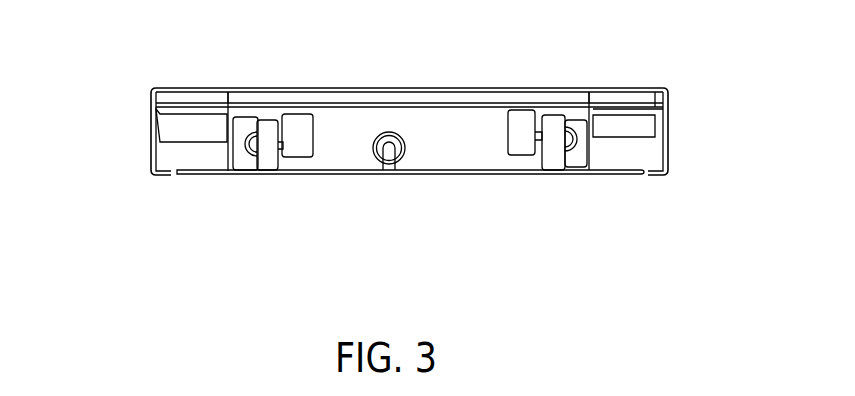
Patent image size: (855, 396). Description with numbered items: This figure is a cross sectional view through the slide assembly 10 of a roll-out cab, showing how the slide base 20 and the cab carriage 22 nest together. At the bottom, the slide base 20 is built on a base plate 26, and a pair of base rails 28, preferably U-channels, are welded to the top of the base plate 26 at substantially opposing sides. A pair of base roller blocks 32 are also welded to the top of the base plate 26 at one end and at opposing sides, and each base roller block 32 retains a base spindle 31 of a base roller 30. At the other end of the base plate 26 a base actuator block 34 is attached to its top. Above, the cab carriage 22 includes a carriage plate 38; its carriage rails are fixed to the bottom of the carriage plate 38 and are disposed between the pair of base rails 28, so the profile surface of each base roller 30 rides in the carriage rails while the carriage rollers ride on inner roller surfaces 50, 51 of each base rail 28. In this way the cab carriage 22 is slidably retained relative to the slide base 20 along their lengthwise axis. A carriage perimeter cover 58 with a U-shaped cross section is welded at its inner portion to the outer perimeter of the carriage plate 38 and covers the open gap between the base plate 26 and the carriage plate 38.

The slide assembly 10 is at (607, 64).
The slide base 20 is at (140, 177).
The cab carriage 22 is at (487, 66).
The base plate 26 is at (327, 176).
The base rails 28 is at (225, 158).
The base roller 30 is at (298, 146).
The base spindle 31 is at (273, 168).
The base roller blocks 32 is at (267, 168).
The base actuator block 34 is at (392, 165).
The carriage plate 38 is at (302, 102).
The inner roller surface 50 is at (260, 121).
The inner roller surface 51 is at (263, 168).
The carriage perimeter cover 58 is at (150, 130).